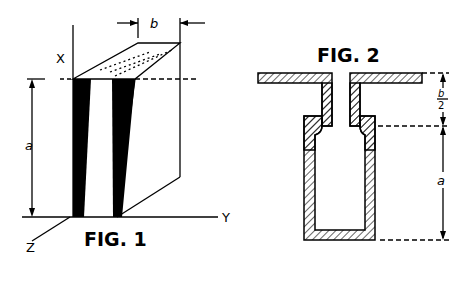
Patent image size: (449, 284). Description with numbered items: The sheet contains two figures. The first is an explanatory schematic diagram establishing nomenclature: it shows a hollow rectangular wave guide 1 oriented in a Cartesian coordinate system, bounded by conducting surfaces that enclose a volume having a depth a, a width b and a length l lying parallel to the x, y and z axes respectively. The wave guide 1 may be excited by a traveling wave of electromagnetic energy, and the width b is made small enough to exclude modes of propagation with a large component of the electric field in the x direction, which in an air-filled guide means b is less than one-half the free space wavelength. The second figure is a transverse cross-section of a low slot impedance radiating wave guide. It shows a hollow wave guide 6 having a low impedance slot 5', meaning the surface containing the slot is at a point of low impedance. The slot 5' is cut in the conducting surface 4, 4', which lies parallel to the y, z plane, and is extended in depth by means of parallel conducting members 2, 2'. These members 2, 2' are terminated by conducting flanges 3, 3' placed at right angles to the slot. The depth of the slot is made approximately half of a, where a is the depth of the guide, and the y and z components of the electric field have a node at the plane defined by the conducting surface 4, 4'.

In FIG. 1, the hollow rectangular wave guide 1 is at (196, 79).
In FIG. 2, the parallel conducting member 2 is at (363, 104).
In FIG. 2, the parallel conducting member 2' is at (314, 104).
In FIG. 2, the conducting flange 3 is at (386, 88).
In FIG. 2, the conducting flange 3' is at (295, 88).
In FIG. 2, the conducting surface 4 is at (303, 133).
In FIG. 2, the conducting surface 4' is at (379, 133).
In FIG. 2, the low impedance slot 5' is at (341, 122).
In FIG. 2, the hollow wave guide 6 is at (345, 215).